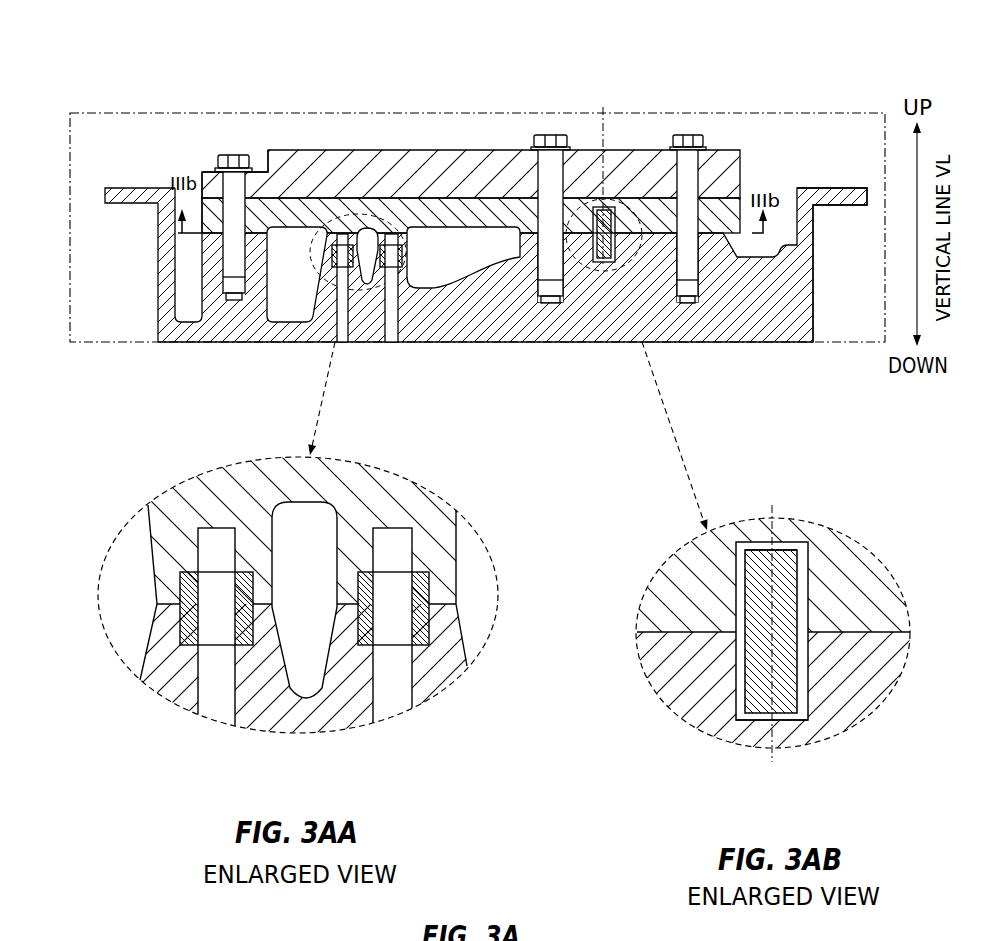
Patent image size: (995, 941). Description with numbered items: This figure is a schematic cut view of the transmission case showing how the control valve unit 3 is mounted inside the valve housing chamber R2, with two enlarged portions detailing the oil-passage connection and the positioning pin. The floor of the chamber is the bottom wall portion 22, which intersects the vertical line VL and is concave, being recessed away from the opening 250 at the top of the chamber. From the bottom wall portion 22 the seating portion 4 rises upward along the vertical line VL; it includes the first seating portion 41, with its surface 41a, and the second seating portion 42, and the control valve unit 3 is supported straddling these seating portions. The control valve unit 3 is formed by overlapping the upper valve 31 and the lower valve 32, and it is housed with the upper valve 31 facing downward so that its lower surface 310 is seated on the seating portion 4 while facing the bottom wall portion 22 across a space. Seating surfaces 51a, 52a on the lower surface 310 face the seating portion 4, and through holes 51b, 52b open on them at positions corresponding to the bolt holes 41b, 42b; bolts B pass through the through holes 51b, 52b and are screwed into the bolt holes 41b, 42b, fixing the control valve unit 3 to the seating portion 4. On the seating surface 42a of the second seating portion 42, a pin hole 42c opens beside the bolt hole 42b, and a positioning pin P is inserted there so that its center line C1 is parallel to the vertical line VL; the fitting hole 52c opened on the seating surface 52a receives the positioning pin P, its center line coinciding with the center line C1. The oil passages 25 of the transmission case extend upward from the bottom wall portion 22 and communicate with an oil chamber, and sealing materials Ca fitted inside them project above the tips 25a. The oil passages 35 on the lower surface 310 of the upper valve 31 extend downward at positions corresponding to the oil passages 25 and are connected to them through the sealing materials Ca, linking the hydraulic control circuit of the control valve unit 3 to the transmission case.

In FIG. 3A, the bolt B is at (429, 162).
In FIG. 3A, the valve housing chamber R2 is at (447, 175).
In FIG. 3A, the lower surface of upper valve 310 is at (465, 228).
In FIG. 3A, the through hole 52b is at (545, 137).
In FIG. 3A, the center line of positioning pin C1 is at (602, 170).
In FIG. 3A, the through hole 51b is at (226, 192).
In FIG. 3A, the seating surface 51a is at (272, 232).
In FIG. 3A, the flange of first wall 41a is at (170, 222).
In FIG. 3A, the bolt hole 41b is at (200, 292).
In FIG. 3A, the first seating portion 41 is at (161, 289).
In FIG. 3A, the bottom wall portion 22 is at (292, 332).
In FIG. 3A, the bolt hole 42b is at (540, 292).
In FIG. 3A, the second seating portion 42 is at (580, 251).
In FIG. 3A, the seating portion 4 is at (706, 362).
In FIG. 3A, the lower valve 32 is at (742, 160).
In FIG. 3A, the upper valve 31 is at (742, 205).
In FIG. 3A, the control valve unit 3 is at (520, 178).
In FIG. 3A, the opening 250 is at (812, 222).
In FIG. 3AA, the oil passage 35 is at (316, 653).
In FIG. 3AA, the tip of oil passage 25a is at (158, 604).
In FIG. 3AA, the sealing material Ca is at (338, 578).
In FIG. 3AA, the oil passage 25 is at (210, 697).
In FIG. 3AB, the fitting hole 52c is at (785, 547).
In FIG. 3AB, the seating surface 52a is at (828, 590).
In FIG. 3AB, the seating surface 42a is at (842, 675).
In FIG. 3AB, the positioning pin P is at (761, 716).
In FIG. 3AB, the pin hole 42c is at (805, 722).